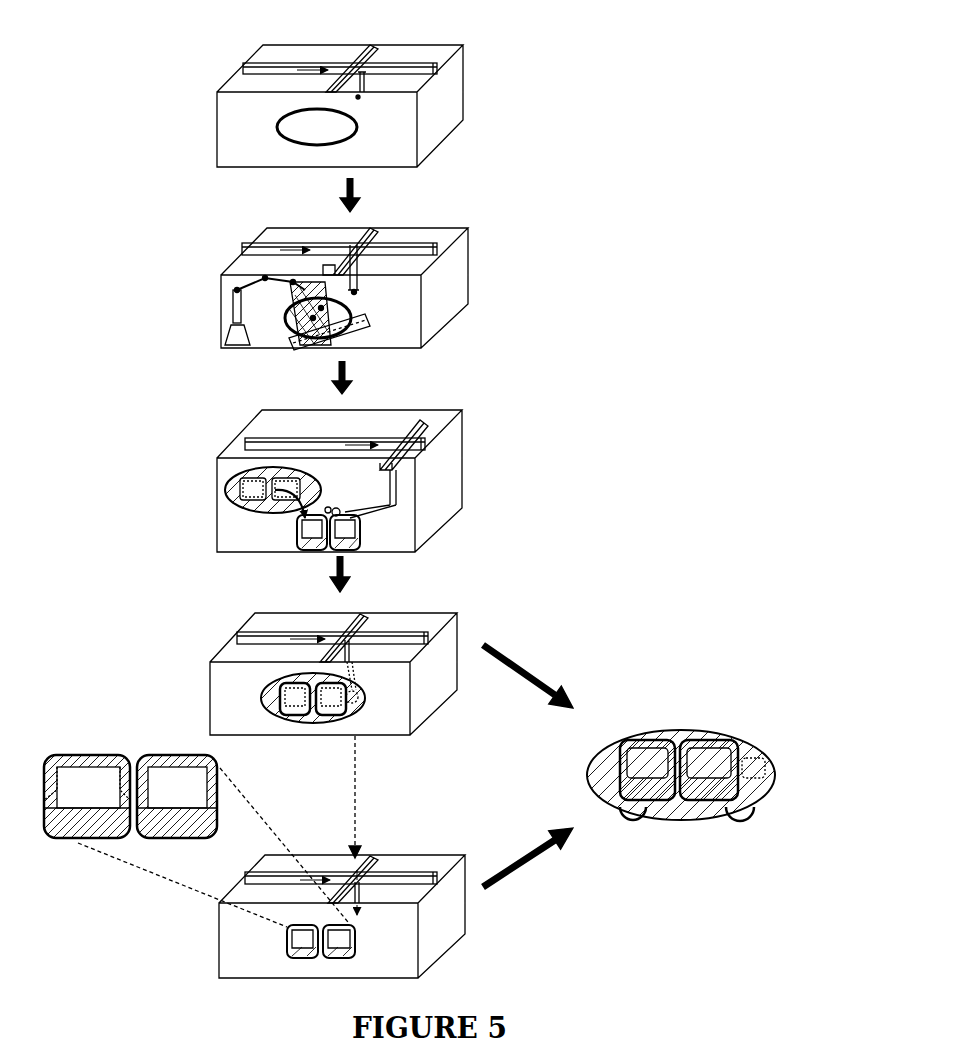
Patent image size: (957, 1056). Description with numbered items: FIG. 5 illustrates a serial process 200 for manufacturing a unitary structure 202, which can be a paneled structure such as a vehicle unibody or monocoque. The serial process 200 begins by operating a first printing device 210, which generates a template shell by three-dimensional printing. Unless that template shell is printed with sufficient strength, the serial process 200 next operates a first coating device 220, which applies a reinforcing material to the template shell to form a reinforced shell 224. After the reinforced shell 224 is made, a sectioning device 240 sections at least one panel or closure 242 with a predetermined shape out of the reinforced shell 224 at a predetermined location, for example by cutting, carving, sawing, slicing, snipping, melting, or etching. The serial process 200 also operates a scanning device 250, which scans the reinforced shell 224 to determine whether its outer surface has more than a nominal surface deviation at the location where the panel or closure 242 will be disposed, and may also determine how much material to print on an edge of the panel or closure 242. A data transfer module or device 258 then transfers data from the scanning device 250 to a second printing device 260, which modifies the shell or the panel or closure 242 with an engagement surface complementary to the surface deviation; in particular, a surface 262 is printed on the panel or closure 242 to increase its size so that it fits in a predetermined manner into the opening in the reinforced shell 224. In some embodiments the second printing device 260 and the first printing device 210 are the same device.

The serial process 200 is at (634, 122).
The unitary structure 202 is at (708, 660).
The first printing device 210 is at (190, 130).
The first coating device 220 is at (186, 306).
The reinforced shell 224 is at (687, 812).
The sectioning device 240 is at (190, 501).
The panel or closure 242 is at (710, 752).
The scanning device 250 is at (216, 634).
The data transfer module or device 258 is at (358, 790).
The second printing device 260 is at (190, 927).
The surface 262 is at (160, 755).